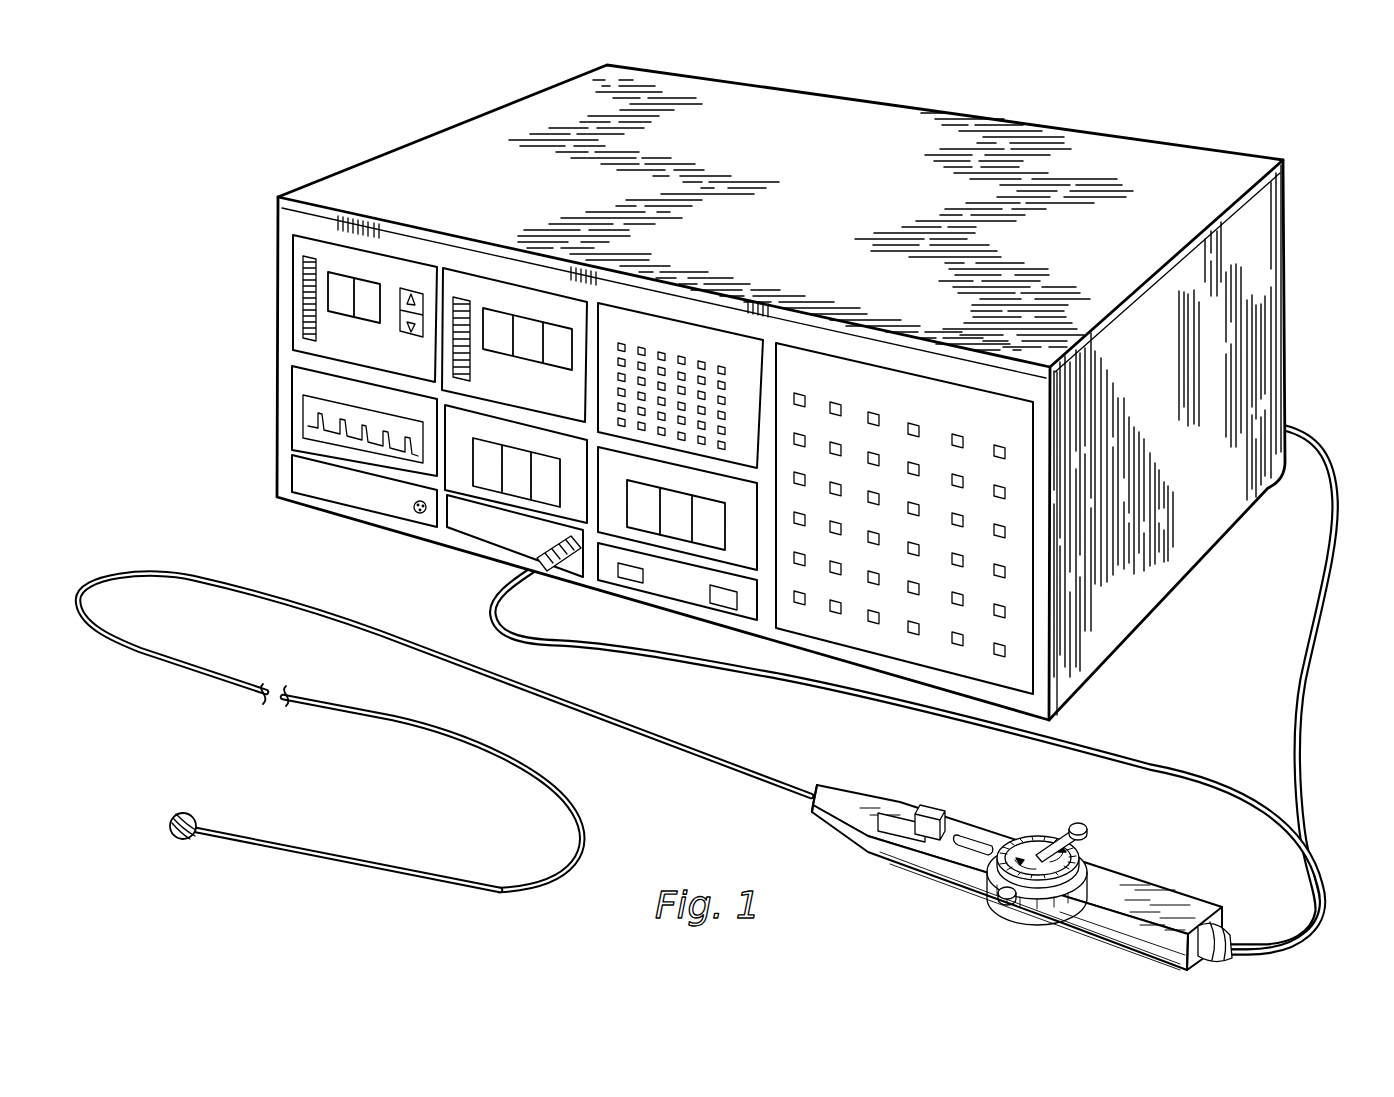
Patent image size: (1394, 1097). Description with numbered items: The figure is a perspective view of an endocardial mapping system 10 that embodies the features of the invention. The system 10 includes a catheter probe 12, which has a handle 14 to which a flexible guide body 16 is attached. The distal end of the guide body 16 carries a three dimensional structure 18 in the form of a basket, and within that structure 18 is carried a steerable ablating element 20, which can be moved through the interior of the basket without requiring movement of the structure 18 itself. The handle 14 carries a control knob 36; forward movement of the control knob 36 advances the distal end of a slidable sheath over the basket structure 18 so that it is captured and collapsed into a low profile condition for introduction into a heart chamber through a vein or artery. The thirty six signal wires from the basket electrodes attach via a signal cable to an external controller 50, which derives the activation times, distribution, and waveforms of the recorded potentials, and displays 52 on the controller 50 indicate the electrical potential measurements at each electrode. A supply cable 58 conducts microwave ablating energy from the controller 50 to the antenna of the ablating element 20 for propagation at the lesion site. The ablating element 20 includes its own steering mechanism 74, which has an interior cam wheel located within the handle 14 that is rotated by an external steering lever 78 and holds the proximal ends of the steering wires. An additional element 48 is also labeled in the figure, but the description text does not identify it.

The endocardial mapping system 10 is at (1313, 314).
The catheter probe 12 is at (884, 878).
The handle 14 is at (1150, 892).
The flexible guide body 16 is at (648, 756).
The three dimensional structure 18 is at (188, 806).
The steerable ablating element 20 is at (178, 836).
The control knob 36 is at (938, 810).
The connecting cable 48 is at (1150, 756).
The external controller 50 is at (850, 185).
The displays 52 is at (874, 394).
The supply cable 58 is at (1305, 672).
The steering mechanism 74 is at (1034, 822).
The external steering lever 78 is at (1084, 834).